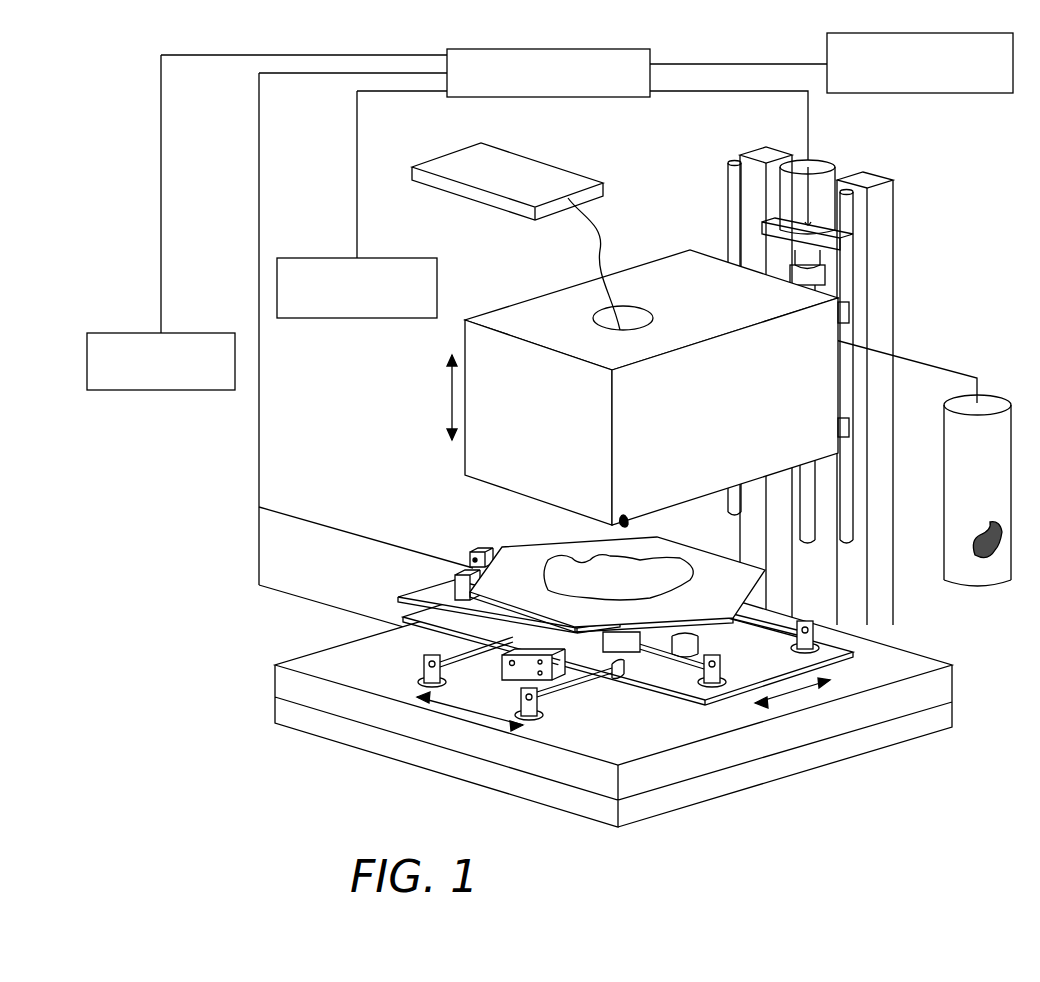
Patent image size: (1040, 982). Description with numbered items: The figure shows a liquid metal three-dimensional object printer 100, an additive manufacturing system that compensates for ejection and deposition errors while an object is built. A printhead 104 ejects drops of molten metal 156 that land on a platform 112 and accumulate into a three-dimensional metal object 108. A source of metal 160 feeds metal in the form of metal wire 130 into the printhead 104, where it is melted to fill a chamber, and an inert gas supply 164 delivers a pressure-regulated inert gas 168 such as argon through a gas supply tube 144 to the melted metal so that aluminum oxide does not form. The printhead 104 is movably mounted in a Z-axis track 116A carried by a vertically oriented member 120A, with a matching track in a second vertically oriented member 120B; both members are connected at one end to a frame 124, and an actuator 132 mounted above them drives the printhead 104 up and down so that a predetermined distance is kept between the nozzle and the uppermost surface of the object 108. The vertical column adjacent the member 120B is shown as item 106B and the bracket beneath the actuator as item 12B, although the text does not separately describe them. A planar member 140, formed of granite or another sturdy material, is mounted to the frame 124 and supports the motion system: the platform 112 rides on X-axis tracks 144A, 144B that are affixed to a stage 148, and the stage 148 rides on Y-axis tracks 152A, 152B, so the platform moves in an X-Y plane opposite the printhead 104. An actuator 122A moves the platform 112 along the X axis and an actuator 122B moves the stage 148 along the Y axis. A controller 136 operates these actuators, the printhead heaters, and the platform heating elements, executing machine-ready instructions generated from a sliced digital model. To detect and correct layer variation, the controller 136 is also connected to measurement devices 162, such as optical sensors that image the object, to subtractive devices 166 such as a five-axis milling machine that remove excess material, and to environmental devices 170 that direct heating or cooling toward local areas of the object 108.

The liquid metal 3D object printer 100 is at (940, 203).
The printhead 104 is at (530, 306).
The vertical support column 106B is at (868, 272).
The three-dimensional metal object 108 is at (688, 580).
The platform 112 is at (515, 546).
The Z-axis track 116A is at (728, 188).
The vertically oriented member 120A is at (738, 223).
The vertically oriented member 120B is at (845, 500).
The actuator 122A is at (450, 577).
The actuator 122B is at (540, 680).
The frame 124 is at (298, 722).
The mounting bracket 12B is at (790, 245).
The metal wire 130 is at (592, 248).
The actuator 132 is at (790, 168).
The controller 136 is at (604, 97).
The planar member 140 is at (315, 662).
The gas supply tube 144 is at (935, 370).
The X-axis track 144A is at (470, 648).
The X-axis track 144B is at (577, 690).
The stage 148 is at (440, 598).
The Y-axis track 152A is at (690, 660).
The Y-axis track 152B is at (805, 612).
The drops of molten metal 156 is at (598, 560).
The source of metal 160 is at (532, 168).
The measurement devices 162 is at (185, 333).
The inert gas supply 164 is at (944, 480).
The subtractive devices 166 is at (373, 258).
The inert gas 168 is at (988, 560).
The environmental devices 170 is at (912, 93).